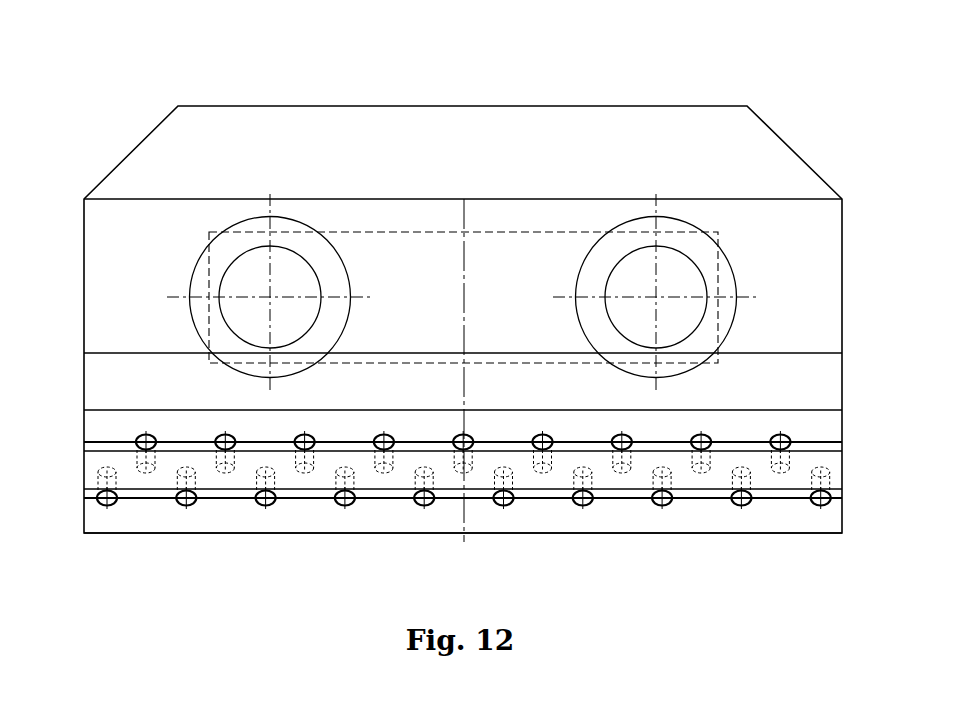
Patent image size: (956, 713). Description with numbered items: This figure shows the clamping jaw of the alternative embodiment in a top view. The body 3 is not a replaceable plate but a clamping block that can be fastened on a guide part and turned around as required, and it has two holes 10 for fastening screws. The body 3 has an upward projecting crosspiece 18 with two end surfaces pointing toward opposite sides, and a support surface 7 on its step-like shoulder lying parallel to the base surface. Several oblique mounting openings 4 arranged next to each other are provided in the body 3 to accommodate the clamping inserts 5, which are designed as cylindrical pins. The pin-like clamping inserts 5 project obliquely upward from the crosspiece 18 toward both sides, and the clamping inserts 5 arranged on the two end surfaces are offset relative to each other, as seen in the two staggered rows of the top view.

The body 3 is at (568, 167).
The holes 10 is at (286, 270).
The support surface 7 is at (103, 427).
The mounting openings 4 is at (535, 437).
The crosspiece 18 is at (409, 462).
The clamping inserts 5 is at (146, 436).